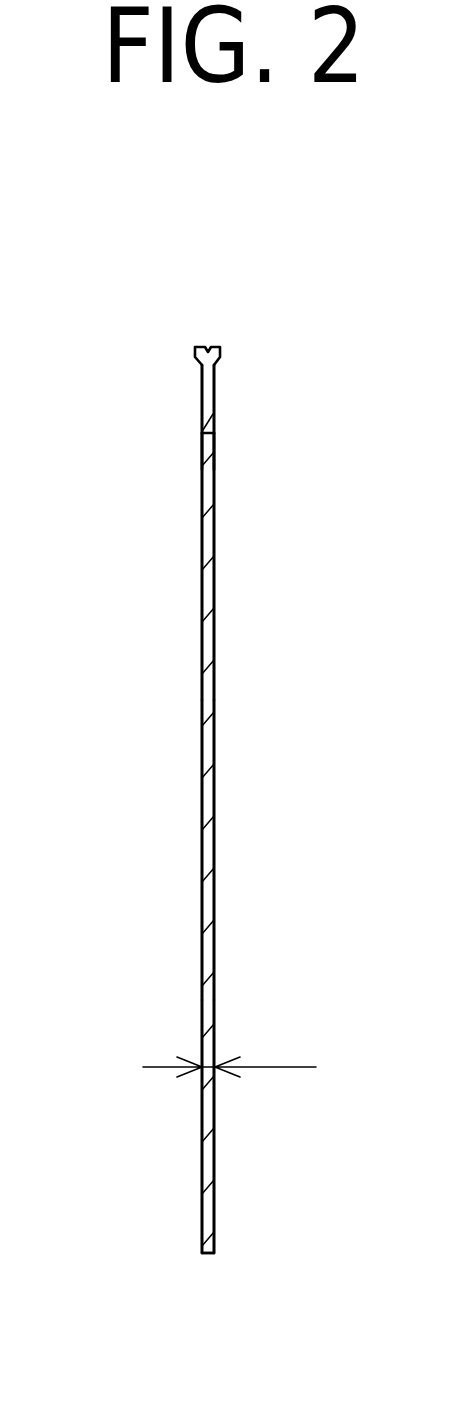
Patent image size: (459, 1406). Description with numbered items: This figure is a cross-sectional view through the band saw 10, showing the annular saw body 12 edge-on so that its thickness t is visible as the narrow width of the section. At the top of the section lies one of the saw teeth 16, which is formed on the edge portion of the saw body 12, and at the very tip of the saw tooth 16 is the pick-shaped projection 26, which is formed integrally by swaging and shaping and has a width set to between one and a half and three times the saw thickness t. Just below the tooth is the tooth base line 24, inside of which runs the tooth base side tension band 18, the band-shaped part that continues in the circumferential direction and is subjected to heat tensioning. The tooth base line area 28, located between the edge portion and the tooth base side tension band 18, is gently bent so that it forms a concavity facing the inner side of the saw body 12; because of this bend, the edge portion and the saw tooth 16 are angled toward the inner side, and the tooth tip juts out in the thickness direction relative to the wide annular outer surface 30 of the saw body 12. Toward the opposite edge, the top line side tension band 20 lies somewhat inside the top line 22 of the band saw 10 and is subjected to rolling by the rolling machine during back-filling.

The band saw 10 is at (128, 298).
The saw body 12 is at (224, 745).
The saw teeth 16 is at (207, 390).
The tooth base side tension band 18 is at (207, 520).
The top line side tension band 20 is at (210, 1133).
The top line 22 is at (209, 1256).
The tooth base line 24 is at (216, 412).
The pick-shaped projection 26 is at (210, 342).
The tooth base line area 28 is at (210, 455).
The annular outer surface 30 is at (217, 847).
The saw thickness t is at (229, 1047).